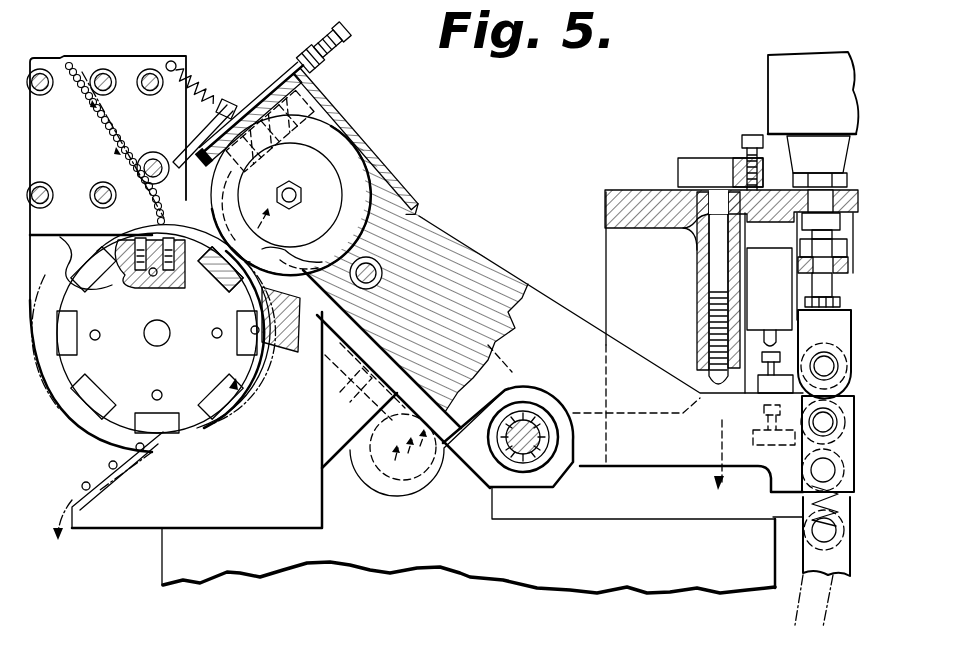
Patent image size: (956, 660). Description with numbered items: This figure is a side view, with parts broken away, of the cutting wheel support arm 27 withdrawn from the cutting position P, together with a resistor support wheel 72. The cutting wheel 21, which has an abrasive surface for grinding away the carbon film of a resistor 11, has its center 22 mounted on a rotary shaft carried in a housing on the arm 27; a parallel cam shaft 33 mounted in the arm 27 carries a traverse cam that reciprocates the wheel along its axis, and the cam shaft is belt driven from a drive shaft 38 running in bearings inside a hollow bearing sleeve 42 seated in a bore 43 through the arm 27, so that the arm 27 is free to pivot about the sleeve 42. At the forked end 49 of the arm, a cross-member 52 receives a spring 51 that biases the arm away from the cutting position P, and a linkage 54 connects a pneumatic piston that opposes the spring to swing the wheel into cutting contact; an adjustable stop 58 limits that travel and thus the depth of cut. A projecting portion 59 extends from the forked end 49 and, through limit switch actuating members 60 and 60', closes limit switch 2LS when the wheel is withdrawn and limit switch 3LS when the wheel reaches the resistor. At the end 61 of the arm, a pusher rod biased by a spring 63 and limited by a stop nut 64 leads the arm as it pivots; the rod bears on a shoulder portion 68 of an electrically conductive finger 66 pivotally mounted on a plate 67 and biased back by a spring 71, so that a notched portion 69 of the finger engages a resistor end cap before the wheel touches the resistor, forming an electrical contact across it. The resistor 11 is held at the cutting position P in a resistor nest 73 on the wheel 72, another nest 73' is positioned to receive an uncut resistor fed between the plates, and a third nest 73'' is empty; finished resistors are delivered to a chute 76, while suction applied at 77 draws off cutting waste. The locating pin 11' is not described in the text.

The resistor 11 is at (157, 340).
The locating pin 11' is at (165, 364).
The cutting wheel 21 is at (378, 158).
The center 22 is at (291, 203).
The cutting wheel support arm 27 is at (440, 318).
The cam shaft 33 is at (382, 272).
The drive shaft 38 is at (537, 427).
The bearing sleeve 42 is at (547, 428).
The bore 43 is at (514, 405).
The forked end 49 is at (802, 447).
The spring 51 is at (803, 510).
The cross-member 52 is at (806, 470).
The linkage 54 is at (852, 575).
The adjustable stop 58 is at (712, 352).
The projecting portion 59 is at (749, 332).
The limit switch actuating member 60 is at (750, 447).
The limit switch actuating member 60' is at (824, 354).
The end of the cutting wheel support arm 61 is at (268, 100).
The spring 63 is at (272, 92).
The stop nut 64 is at (302, 52).
The electrically conductive finger 66 is at (172, 160).
The plate 67 is at (122, 77).
The shoulder portion 68 is at (290, 195).
The notched portion 69 is at (246, 205).
The spring 71 is at (197, 90).
The resistor support wheel 72 is at (188, 422).
The resistor nest 73 is at (223, 276).
The resistor nest 73' is at (150, 250).
The resistor nest 73'' is at (94, 246).
The chute 76 is at (95, 475).
The suction location 77 is at (276, 338).
The cutting position P is at (299, 258).
The limit switch 2LS is at (770, 507).
The limit switch 3LS is at (767, 287).